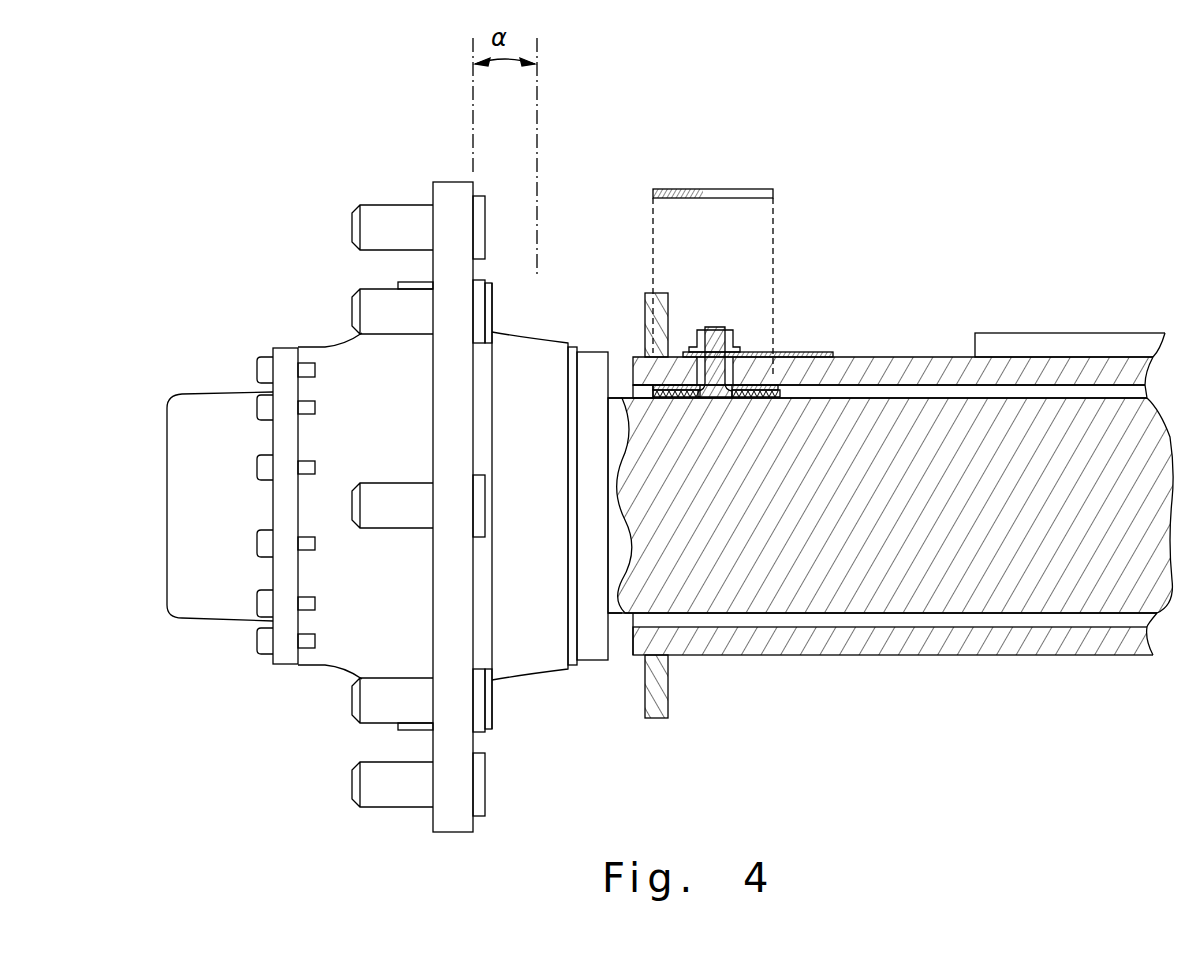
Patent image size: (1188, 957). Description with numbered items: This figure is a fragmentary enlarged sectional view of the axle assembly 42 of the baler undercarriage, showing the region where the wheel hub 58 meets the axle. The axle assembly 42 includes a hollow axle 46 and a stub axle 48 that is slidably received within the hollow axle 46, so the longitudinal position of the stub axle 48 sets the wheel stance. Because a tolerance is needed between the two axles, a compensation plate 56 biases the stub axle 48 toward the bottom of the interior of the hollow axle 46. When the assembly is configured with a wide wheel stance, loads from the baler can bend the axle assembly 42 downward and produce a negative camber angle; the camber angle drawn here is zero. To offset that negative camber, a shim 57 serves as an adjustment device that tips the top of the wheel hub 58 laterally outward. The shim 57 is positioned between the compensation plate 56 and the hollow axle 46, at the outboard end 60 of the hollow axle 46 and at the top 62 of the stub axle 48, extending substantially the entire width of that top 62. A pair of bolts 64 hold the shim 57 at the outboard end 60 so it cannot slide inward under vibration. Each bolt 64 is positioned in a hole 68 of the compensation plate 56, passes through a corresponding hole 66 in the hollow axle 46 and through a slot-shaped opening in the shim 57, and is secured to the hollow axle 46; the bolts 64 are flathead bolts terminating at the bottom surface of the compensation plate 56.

The axle assembly 42 is at (1080, 275).
The hollow axle 46 is at (1073, 657).
The stub axle 48 is at (813, 593).
The compensation plate 56 is at (763, 414).
The shim 57 is at (740, 192).
The wheel hub 58 is at (323, 687).
The outboard end of the hollow axle 60 is at (693, 656).
The top of the stub axle 62 is at (617, 398).
The bolt 64 is at (714, 328).
The hole 66 is at (744, 366).
The hole 68 is at (736, 392).